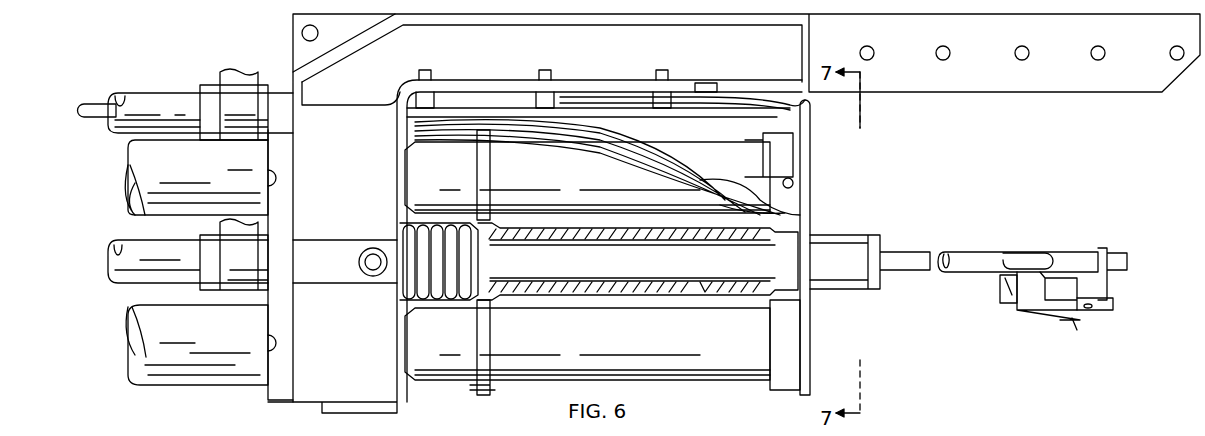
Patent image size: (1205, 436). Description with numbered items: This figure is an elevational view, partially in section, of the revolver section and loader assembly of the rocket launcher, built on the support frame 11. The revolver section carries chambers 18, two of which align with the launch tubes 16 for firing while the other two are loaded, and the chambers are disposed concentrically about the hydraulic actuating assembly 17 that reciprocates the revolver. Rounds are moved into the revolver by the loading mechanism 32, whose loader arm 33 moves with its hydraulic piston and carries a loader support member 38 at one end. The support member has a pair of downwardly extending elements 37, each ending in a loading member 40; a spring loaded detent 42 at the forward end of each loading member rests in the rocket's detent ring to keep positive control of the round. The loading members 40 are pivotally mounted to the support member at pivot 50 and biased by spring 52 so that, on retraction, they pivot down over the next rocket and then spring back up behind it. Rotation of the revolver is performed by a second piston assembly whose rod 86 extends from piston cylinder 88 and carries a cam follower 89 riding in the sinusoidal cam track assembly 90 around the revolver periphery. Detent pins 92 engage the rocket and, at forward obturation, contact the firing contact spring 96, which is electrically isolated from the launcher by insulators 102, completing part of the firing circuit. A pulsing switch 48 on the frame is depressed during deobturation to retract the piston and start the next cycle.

The support frame 11 is at (338, 405).
The launch tubes 16 is at (140, 162).
The hydraulic actuating assembly 17 is at (130, 290).
The chambers 18 is at (730, 365).
The loading mechanism 32 is at (1037, 243).
The loader arm 33 is at (893, 253).
The downwardly extending elements 37 is at (1110, 305).
The loader support member 38 is at (1105, 250).
The loading member 40 is at (1048, 330).
The spring loaded detent 42 is at (1004, 303).
The pulsing switch 48 is at (1010, 257).
The pivot 50 is at (1090, 309).
The spring 52 is at (1076, 322).
The rod 86 is at (96, 105).
The piston cylinder 88 is at (143, 97).
The cam follower 89 is at (450, 105).
The sinusoidal cam track assembly 90 is at (563, 127).
The detent pins 92 is at (808, 115).
The firing contact spring 96 is at (812, 100).
The insulators 102 is at (718, 84).